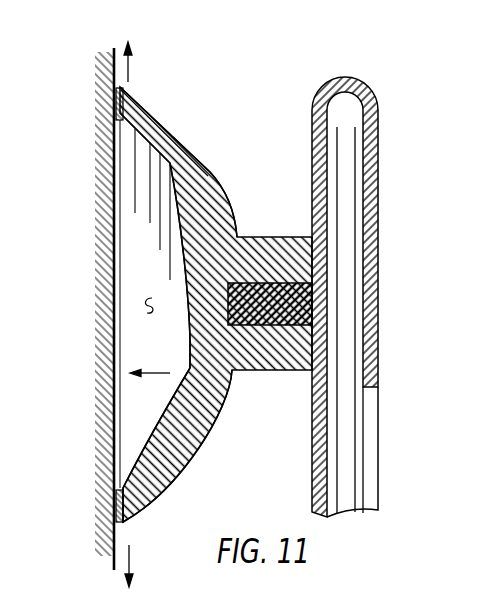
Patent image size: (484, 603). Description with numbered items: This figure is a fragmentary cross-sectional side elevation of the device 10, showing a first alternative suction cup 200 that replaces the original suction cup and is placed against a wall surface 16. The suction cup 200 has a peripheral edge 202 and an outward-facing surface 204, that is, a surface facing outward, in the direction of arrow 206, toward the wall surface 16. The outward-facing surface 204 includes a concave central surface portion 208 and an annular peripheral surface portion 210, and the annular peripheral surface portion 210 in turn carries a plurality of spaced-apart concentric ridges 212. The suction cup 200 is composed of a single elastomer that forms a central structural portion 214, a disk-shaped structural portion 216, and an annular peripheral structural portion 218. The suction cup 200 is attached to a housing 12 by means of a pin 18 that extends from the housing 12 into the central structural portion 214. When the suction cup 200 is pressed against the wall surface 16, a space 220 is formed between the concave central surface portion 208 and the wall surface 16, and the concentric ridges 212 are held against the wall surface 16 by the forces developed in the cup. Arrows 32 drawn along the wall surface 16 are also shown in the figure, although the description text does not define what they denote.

The device 10 is at (345, 297).
The housing 12 is at (381, 162).
The wall surface 16 is at (117, 538).
The pin 18 is at (297, 370).
The flow direction 32 is at (123, 63).
The first alternative suction cup 200 is at (187, 114).
The peripheral edge 202 is at (107, 58).
The outward-facing surface 204 is at (165, 421).
The arrow 206 is at (152, 365).
The concave central surface portion 208 is at (183, 240).
The annular peripheral surface portion 210 is at (115, 112).
The concentric ridges 212 is at (115, 506).
The central structural portion 214 is at (252, 371).
The disk-shaped structural portion 216 is at (210, 168).
The annular peripheral structural portion 218 is at (137, 92).
The space 220 is at (145, 313).